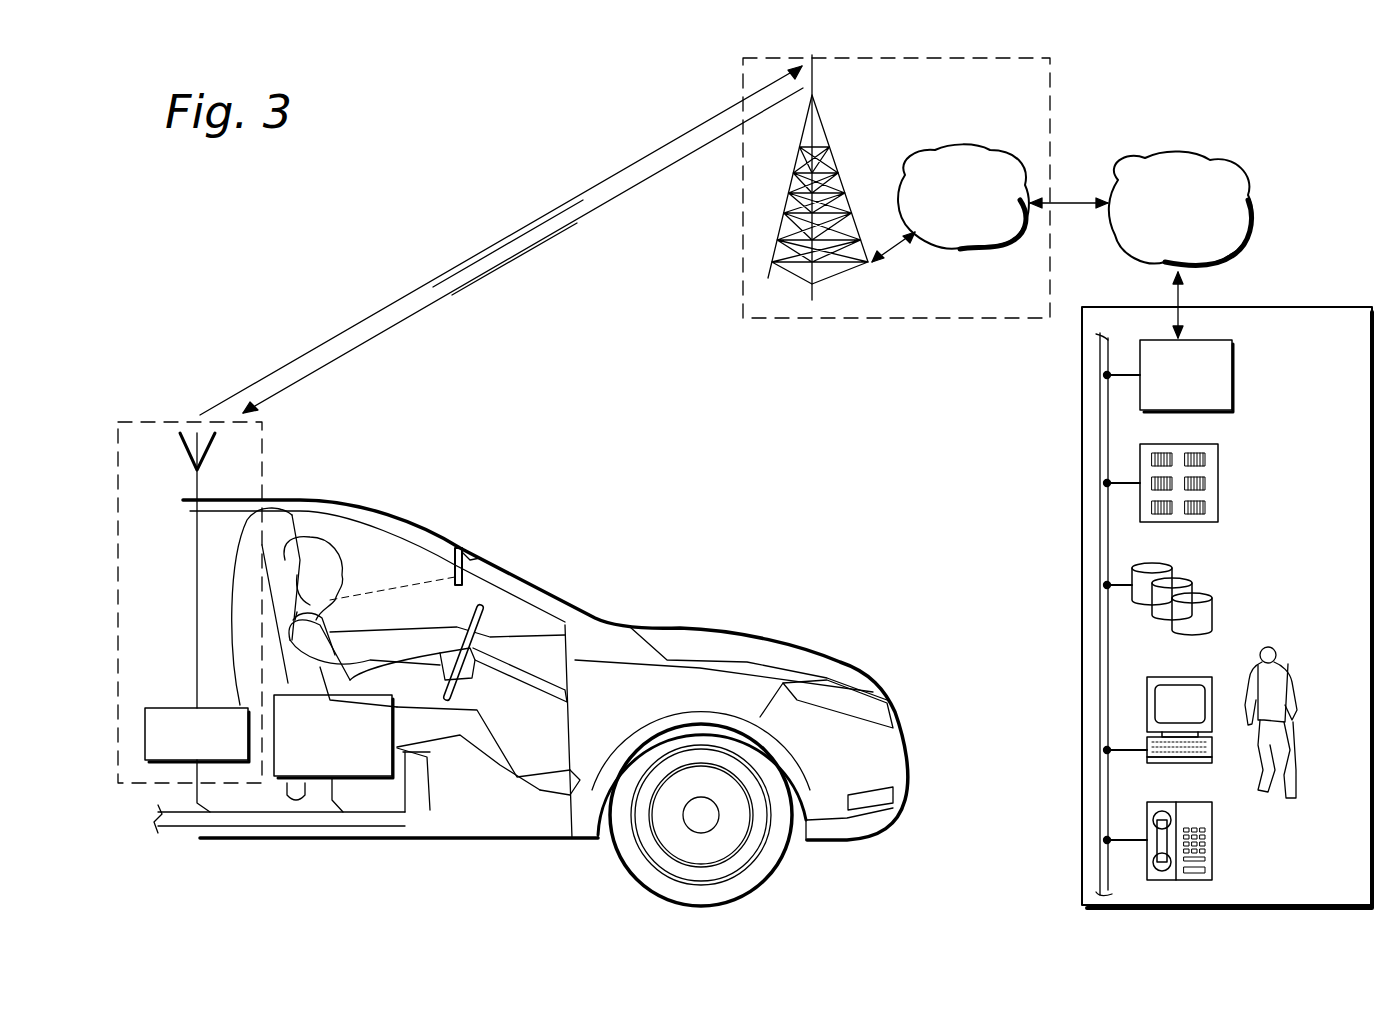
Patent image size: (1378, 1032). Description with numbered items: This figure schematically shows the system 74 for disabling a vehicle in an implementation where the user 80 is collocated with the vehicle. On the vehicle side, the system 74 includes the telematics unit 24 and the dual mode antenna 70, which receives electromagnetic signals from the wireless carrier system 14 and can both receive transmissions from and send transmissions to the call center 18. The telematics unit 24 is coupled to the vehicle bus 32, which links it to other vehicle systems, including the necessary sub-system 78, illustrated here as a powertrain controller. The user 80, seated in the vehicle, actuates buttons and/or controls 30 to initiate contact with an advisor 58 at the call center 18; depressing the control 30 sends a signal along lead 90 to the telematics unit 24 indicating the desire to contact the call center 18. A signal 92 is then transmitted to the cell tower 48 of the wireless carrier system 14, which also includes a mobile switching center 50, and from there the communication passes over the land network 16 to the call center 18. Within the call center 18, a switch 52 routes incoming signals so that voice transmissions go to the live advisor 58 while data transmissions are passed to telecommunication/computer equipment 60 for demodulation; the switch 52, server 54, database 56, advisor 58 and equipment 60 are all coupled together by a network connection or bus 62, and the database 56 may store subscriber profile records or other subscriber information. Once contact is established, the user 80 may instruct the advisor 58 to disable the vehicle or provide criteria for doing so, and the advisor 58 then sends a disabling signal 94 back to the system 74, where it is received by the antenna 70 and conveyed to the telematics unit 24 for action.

The wireless carrier system 14 is at (800, 322).
The land network 16 is at (1248, 243).
The call center 18 is at (1300, 308).
The telematics unit 24 is at (172, 707).
The buttons and/or controls 30 is at (456, 590).
The vehicle bus 32 is at (192, 830).
The cell tower 48 is at (830, 133).
The mobile switching center 50 is at (943, 250).
The switch 52 is at (1234, 368).
The server 54 is at (1220, 462).
The database 56 is at (1180, 578).
The advisor 58 is at (1280, 668).
The telecommunication/computer equipment 60 is at (1214, 838).
The network connection or bus 62 is at (1112, 668).
The dual mode antenna 70 is at (205, 452).
The system for disabling a vehicle 74 is at (279, 478).
The necessary sub-system 78 is at (360, 778).
The user 80 is at (340, 561).
The lead 90 is at (232, 582).
The signal 92 is at (490, 238).
The disabling signal 94 is at (510, 262).